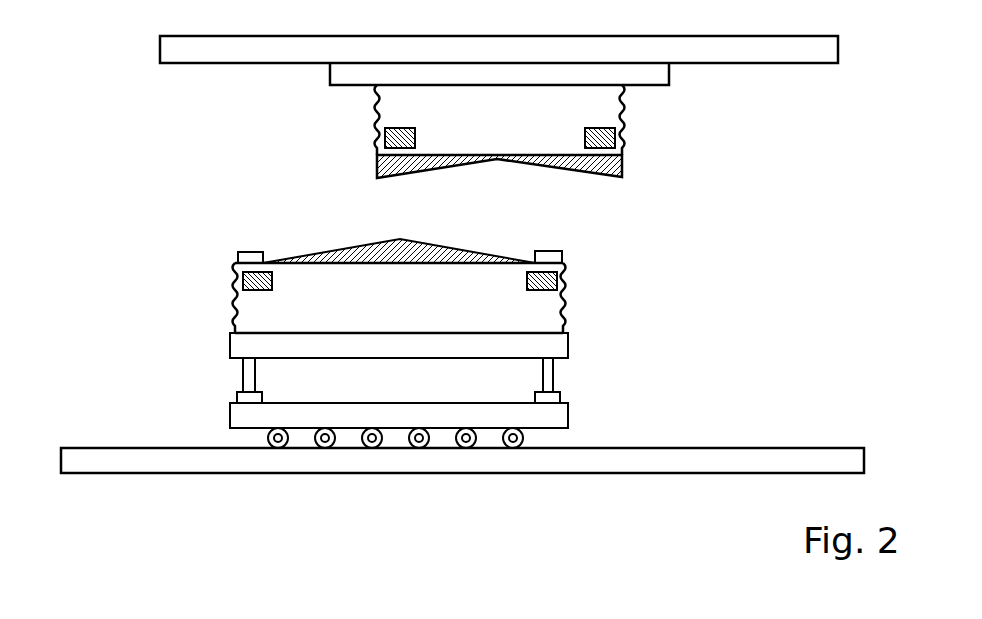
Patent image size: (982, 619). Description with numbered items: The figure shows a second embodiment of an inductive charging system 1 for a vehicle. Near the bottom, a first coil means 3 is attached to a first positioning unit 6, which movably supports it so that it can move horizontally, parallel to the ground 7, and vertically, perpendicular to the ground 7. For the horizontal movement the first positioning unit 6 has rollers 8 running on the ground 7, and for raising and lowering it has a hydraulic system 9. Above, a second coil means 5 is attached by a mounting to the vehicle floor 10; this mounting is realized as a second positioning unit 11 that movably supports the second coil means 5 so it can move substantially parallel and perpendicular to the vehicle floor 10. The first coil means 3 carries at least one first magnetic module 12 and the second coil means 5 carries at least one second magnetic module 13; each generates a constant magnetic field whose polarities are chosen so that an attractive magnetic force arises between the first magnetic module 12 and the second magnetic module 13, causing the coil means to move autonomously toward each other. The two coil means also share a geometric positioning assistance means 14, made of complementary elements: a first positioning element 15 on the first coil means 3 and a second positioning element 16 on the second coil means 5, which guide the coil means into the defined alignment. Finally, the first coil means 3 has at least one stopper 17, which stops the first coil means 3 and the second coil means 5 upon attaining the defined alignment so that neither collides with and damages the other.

The inductive charging system 1 is at (97, 158).
The first coil means 3 is at (565, 302).
The second coil means 5 is at (373, 140).
The first positioning unit 6 is at (193, 320).
The ground 7 is at (832, 448).
The rollers 8 is at (512, 428).
The hydraulic system 9 is at (243, 370).
The vehicle floor 10 is at (743, 63).
The second positioning unit 11 is at (657, 85).
The first magnetic module 12 is at (272, 281).
The second magnetic module 13 is at (415, 138).
The positioning assistance means 14 is at (313, 238).
The first positioning element 15 is at (375, 240).
The second positioning element 16 is at (622, 165).
The stopper 17 is at (255, 250).